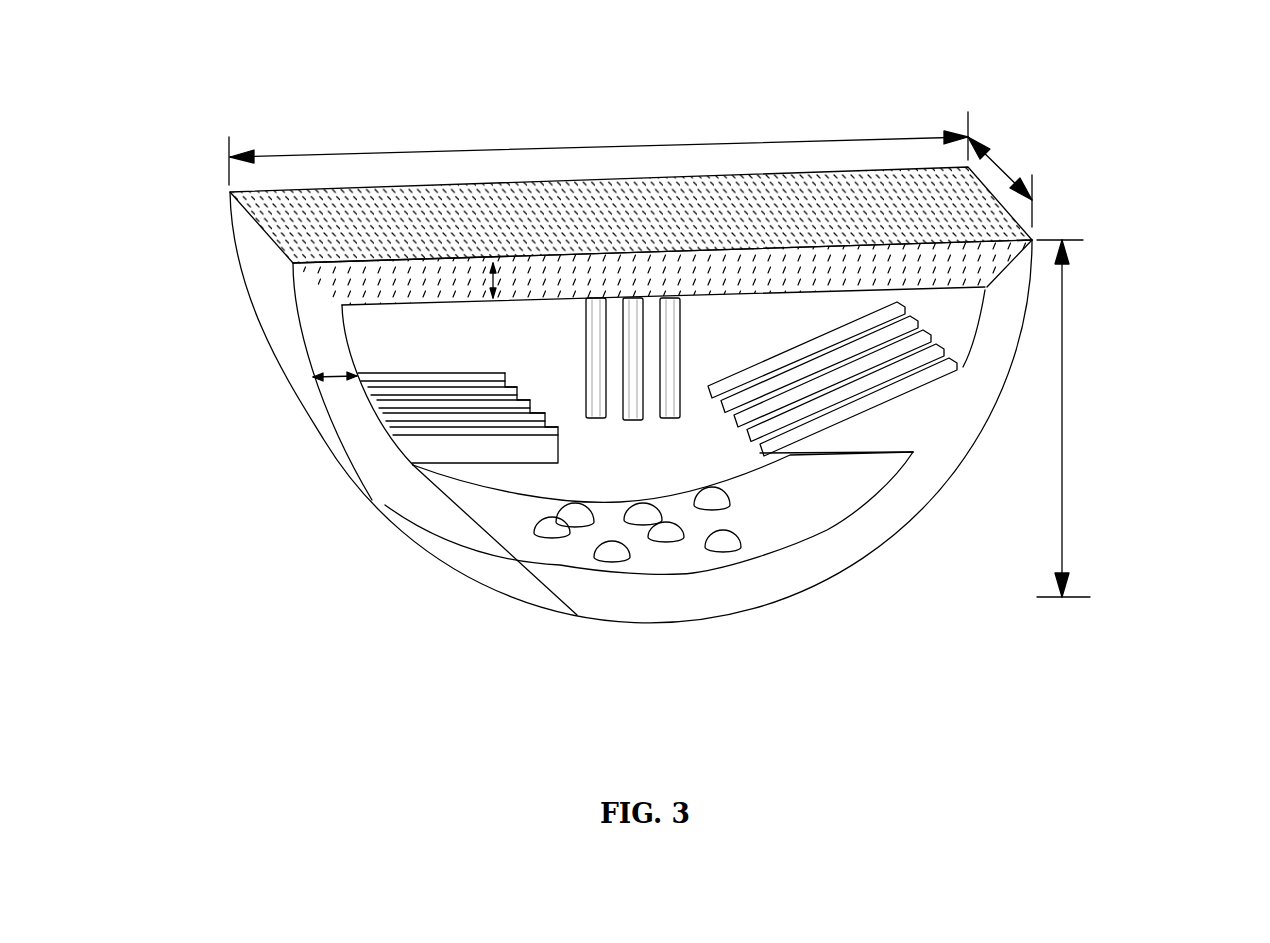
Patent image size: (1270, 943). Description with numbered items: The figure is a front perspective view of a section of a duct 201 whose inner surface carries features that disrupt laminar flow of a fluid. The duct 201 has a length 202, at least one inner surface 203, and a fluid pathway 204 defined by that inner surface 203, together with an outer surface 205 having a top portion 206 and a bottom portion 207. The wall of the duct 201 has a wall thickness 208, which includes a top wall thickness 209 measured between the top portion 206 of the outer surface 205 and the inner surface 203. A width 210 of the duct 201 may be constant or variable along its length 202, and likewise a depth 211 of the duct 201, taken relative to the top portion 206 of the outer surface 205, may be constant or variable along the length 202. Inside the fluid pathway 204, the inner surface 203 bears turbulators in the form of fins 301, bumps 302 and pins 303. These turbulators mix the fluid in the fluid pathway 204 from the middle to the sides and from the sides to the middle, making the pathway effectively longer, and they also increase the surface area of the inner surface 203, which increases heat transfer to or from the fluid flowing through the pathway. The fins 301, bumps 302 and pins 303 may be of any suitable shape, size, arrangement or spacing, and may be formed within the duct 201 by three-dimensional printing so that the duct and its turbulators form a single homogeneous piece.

The duct 201 is at (1095, 138).
The length 202 is at (990, 168).
The inner surface 203 is at (452, 492).
The fluid pathway 204 is at (733, 328).
The outer surface 205 is at (365, 227).
The top portion 206 is at (530, 207).
The bottom portion 207 is at (262, 272).
The wall thickness 208 is at (338, 380).
The top wall thickness 209 is at (492, 268).
The width 210 is at (598, 147).
The depth 211 is at (1065, 418).
The fins 301 is at (595, 448).
The bumps 302 is at (556, 538).
The pins 303 is at (603, 355).